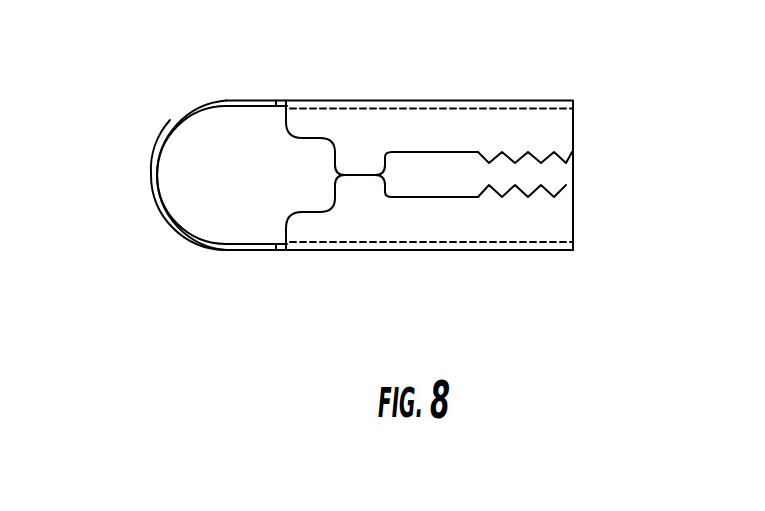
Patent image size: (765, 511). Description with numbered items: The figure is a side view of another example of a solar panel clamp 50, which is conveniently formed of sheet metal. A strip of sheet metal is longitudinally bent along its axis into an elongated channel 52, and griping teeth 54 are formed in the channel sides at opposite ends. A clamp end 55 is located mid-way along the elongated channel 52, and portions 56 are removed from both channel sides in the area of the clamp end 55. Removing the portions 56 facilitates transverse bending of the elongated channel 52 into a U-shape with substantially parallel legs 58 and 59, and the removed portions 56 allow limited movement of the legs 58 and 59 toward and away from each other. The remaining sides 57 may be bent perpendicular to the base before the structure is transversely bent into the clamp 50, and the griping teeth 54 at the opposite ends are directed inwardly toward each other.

The solar panel clamp 50 is at (79, 107).
The elongated channel 52 is at (365, 252).
The griping teeth 54 is at (566, 185).
The clamp end 55 is at (150, 177).
The removed portions 56 is at (210, 248).
The remaining sides 57 is at (392, 130).
The leg 58 is at (560, 105).
The leg 59 is at (517, 248).